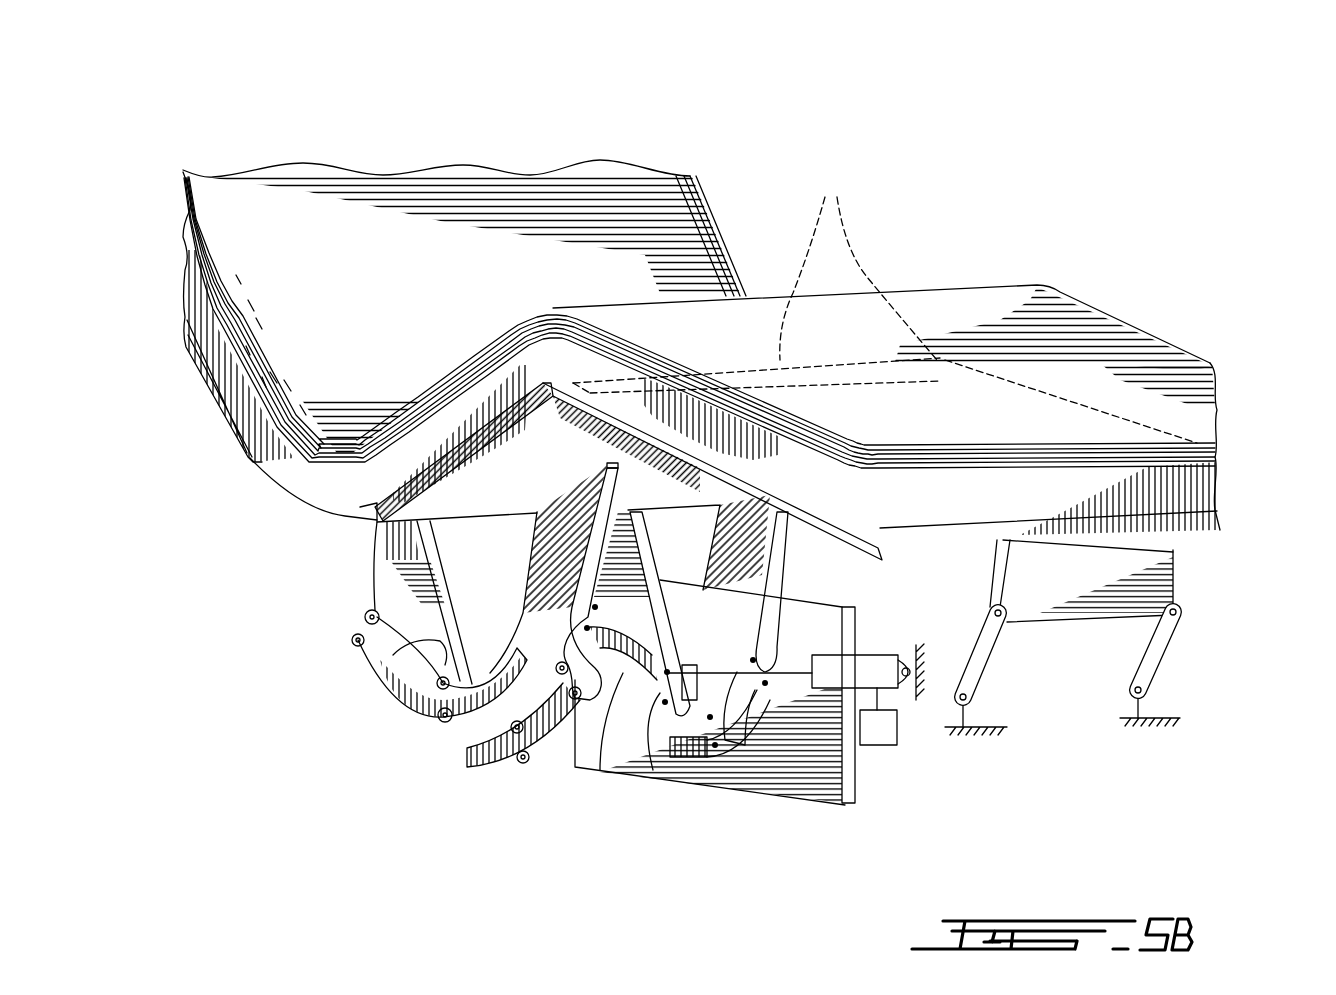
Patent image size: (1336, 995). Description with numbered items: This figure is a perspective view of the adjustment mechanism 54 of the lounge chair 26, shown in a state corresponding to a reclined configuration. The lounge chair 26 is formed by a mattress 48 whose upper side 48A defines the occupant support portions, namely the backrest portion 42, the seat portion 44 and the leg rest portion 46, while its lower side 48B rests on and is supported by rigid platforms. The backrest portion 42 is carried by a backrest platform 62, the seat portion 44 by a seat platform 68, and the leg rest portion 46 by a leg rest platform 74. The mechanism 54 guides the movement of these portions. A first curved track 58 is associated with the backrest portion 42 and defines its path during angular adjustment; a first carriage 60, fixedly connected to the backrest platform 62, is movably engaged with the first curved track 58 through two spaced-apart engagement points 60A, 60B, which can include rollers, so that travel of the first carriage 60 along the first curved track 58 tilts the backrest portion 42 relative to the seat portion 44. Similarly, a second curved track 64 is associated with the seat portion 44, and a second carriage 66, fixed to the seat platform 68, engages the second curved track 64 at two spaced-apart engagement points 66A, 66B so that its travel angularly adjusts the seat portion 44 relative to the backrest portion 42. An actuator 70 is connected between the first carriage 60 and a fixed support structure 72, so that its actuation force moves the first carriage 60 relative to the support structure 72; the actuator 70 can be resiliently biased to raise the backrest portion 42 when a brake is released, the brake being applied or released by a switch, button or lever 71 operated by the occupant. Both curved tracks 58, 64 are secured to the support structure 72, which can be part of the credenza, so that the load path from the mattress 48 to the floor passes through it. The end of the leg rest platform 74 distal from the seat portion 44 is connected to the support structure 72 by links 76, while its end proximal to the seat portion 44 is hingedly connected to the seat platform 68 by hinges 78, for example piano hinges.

The lounge chair 26 is at (272, 98).
The backrest portion 42 is at (455, 203).
The seat portion 44 is at (924, 257).
The leg rest portion 46 is at (1047, 317).
The mattress 48 is at (1190, 392).
The upper side 48A is at (1102, 322).
The lower side 48B is at (1163, 526).
The mechanism 54 is at (251, 742).
The first curved track 58 is at (395, 672).
The first carriage 60 is at (403, 567).
The engagement point 60A is at (366, 616).
The engagement point 60B is at (440, 718).
The backrest platform 62 is at (185, 337).
The second curved track 64 is at (468, 757).
The second carriage 66 is at (540, 530).
The engagement point 66A is at (520, 762).
The engagement point 66B is at (578, 722).
The seat platform 68 is at (370, 520).
The actuator 70 is at (795, 672).
The lever 71 is at (878, 716).
The support structure 72 is at (848, 790).
The leg rest platform 74 is at (975, 537).
The link 76 is at (1148, 655).
The hinge 78 is at (858, 265).